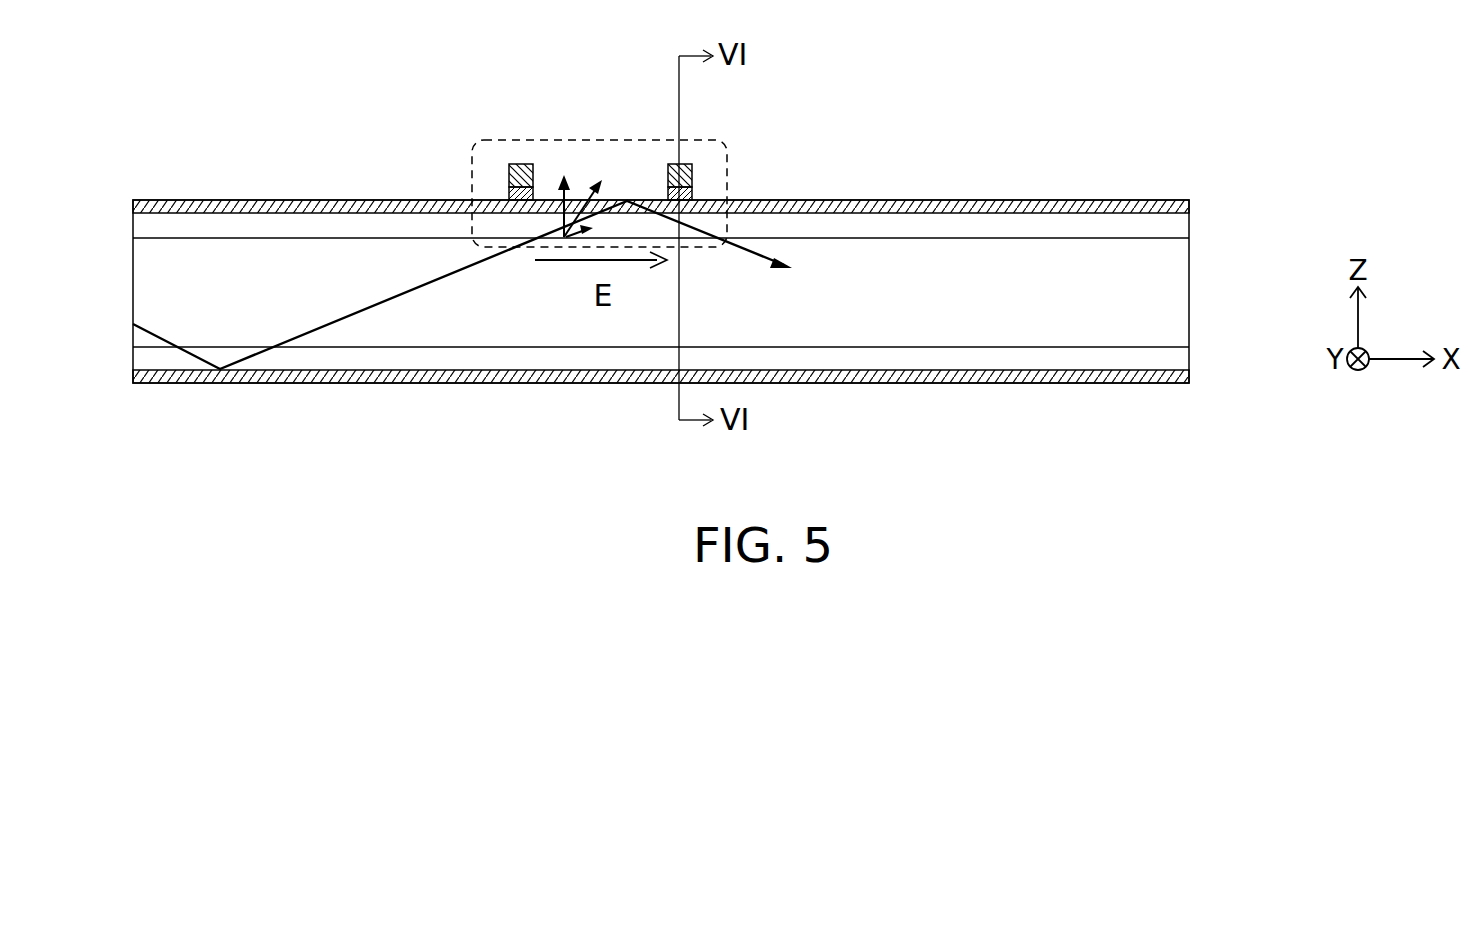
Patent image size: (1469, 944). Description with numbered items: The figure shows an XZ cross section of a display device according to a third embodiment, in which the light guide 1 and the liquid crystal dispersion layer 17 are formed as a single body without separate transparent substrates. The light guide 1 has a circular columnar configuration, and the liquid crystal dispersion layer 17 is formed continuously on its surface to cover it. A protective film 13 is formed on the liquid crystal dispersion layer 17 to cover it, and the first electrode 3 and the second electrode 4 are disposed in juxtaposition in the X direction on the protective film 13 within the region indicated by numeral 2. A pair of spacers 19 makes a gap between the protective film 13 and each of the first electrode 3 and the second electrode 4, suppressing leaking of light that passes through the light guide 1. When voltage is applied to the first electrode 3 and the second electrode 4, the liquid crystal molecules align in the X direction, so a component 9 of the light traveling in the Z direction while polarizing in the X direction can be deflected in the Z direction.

The light guide 1 is at (703, 318).
The coupler 2 is at (477, 148).
The first electrode 3 is at (451, 129).
The second electrode 4 is at (692, 173).
The component 9 is at (393, 300).
The protective film 13 is at (1190, 205).
The liquid crystal dispersion layer 17 is at (1178, 226).
The spacer 19 is at (510, 193).